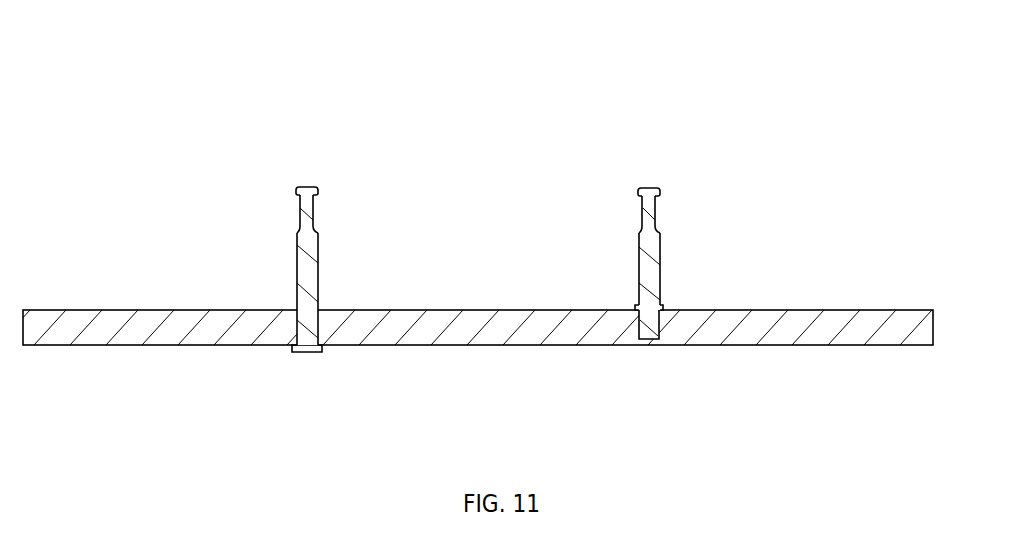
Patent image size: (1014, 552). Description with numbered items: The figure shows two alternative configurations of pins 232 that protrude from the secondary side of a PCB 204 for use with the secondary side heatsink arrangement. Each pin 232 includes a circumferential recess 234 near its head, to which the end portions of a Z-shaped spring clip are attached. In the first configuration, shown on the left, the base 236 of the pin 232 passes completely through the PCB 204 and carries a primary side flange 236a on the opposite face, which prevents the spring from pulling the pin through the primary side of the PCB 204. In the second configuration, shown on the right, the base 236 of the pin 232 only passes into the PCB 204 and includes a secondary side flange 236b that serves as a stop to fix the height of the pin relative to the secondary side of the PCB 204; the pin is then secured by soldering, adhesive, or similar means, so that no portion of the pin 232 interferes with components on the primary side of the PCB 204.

The PCB 204 is at (825, 302).
The pin 232 is at (322, 170).
The circumferential recess 234 is at (326, 210).
The base 236 is at (327, 298).
The primary side flange 236a is at (297, 358).
The secondary side flange 236b is at (628, 300).